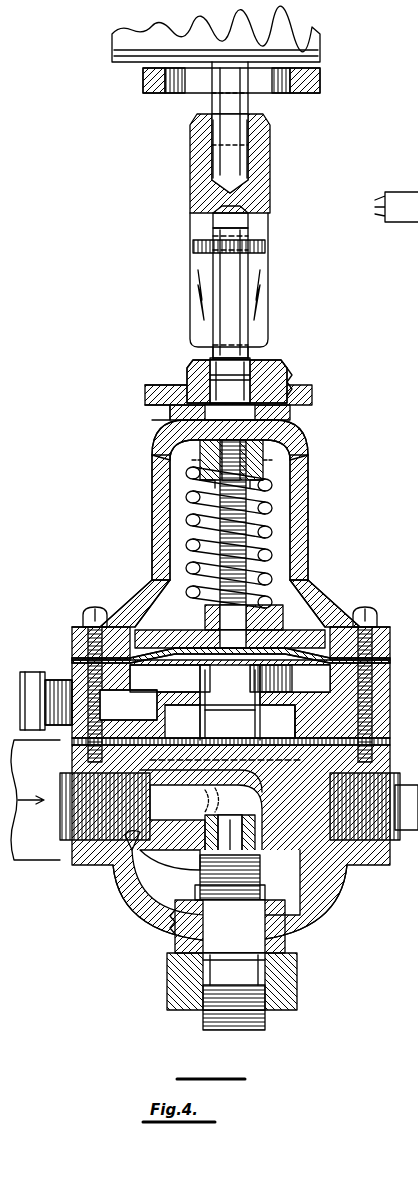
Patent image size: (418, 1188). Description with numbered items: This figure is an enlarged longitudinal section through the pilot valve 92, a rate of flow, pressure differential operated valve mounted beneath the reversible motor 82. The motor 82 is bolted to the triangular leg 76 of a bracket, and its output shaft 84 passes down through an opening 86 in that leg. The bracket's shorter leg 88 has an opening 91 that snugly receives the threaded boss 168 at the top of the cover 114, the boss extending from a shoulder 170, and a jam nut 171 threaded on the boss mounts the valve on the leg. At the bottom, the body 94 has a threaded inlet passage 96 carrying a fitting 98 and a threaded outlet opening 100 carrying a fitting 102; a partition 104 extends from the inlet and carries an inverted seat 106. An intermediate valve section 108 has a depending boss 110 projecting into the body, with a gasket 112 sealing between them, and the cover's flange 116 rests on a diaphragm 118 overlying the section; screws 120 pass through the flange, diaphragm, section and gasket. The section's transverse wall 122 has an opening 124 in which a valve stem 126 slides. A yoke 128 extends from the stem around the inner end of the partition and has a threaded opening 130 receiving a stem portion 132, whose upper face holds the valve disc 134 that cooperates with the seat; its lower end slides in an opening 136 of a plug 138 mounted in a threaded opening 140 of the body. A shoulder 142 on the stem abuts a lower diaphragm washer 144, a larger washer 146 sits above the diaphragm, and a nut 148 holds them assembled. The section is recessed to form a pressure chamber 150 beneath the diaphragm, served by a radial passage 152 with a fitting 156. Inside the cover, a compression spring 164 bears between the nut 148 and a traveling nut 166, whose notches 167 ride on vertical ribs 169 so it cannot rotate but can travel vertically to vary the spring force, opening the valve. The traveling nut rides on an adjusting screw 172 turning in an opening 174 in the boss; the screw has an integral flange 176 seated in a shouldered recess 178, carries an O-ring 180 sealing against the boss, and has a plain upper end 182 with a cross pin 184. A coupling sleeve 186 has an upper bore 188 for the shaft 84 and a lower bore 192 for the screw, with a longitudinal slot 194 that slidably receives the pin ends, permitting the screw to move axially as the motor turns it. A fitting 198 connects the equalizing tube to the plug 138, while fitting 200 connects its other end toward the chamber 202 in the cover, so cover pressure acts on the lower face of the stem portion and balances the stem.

The triangular leg 76 is at (316, 94).
The reversible motor 82 is at (102, 51).
The output shaft 84 is at (210, 98).
The opening 86 is at (280, 88).
The shorter leg 88 is at (147, 388).
The opening 91 is at (182, 384).
The pilot valve 92 is at (318, 516).
The body 94 is at (128, 880).
The inlet passage 96 is at (160, 850).
The fitting 98 is at (30, 858).
The outlet opening 100 is at (266, 790).
The fitting 102 is at (200, 800).
The partition 104 is at (258, 810).
The inverted seat 106 is at (258, 838).
The intermediate valve section 108 is at (386, 690).
The depending boss 110 is at (231, 843).
The gasket 112 is at (388, 740).
The cover 114 is at (155, 508).
The flange 116 is at (388, 632).
The diaphragm 118 is at (388, 660).
The screws 120 is at (90, 606).
The transverse wall 122 is at (311, 678).
The opening 124 is at (248, 708).
The valve stem 126 is at (242, 683).
The yoke 128 is at (246, 768).
The threaded opening 130 is at (262, 873).
The stem portion 132 is at (258, 896).
The valve disc 134 is at (200, 866).
The opening 136 is at (286, 936).
The plug 138 is at (298, 976).
The threaded opening 140 is at (178, 938).
The shoulder 142 is at (210, 682).
The lower diaphragm washer 144 is at (170, 678).
The larger washer 146 is at (282, 614).
The nut 148 is at (195, 628).
The pressure chamber 150 is at (298, 708).
The radial passage 152 is at (136, 718).
The fitting 156 is at (48, 678).
The compression spring 164 is at (262, 482).
The traveling nut 166 is at (262, 448).
The notches 167 is at (268, 464).
The threaded boss 168 is at (258, 364).
The vertical ribs 169 is at (186, 486).
The shoulder 170 is at (170, 412).
The jam nut 171 is at (288, 374).
The adjusting screw 172 is at (246, 500).
The opening 174 is at (212, 358).
The integral flange 176 is at (286, 415).
The shouldered recess 178 is at (165, 430).
The O-ring 180 is at (230, 380).
The plain upper end 182 is at (242, 268).
The pin 184 is at (258, 242).
The coupling sleeve 186 is at (280, 151).
The bore 188 is at (214, 152).
The bore 192 is at (213, 222).
The slot 194 is at (199, 268).
The fitting 198 is at (256, 1032).
The fitting 200 is at (416, 558).
The chamber 202 is at (158, 594).